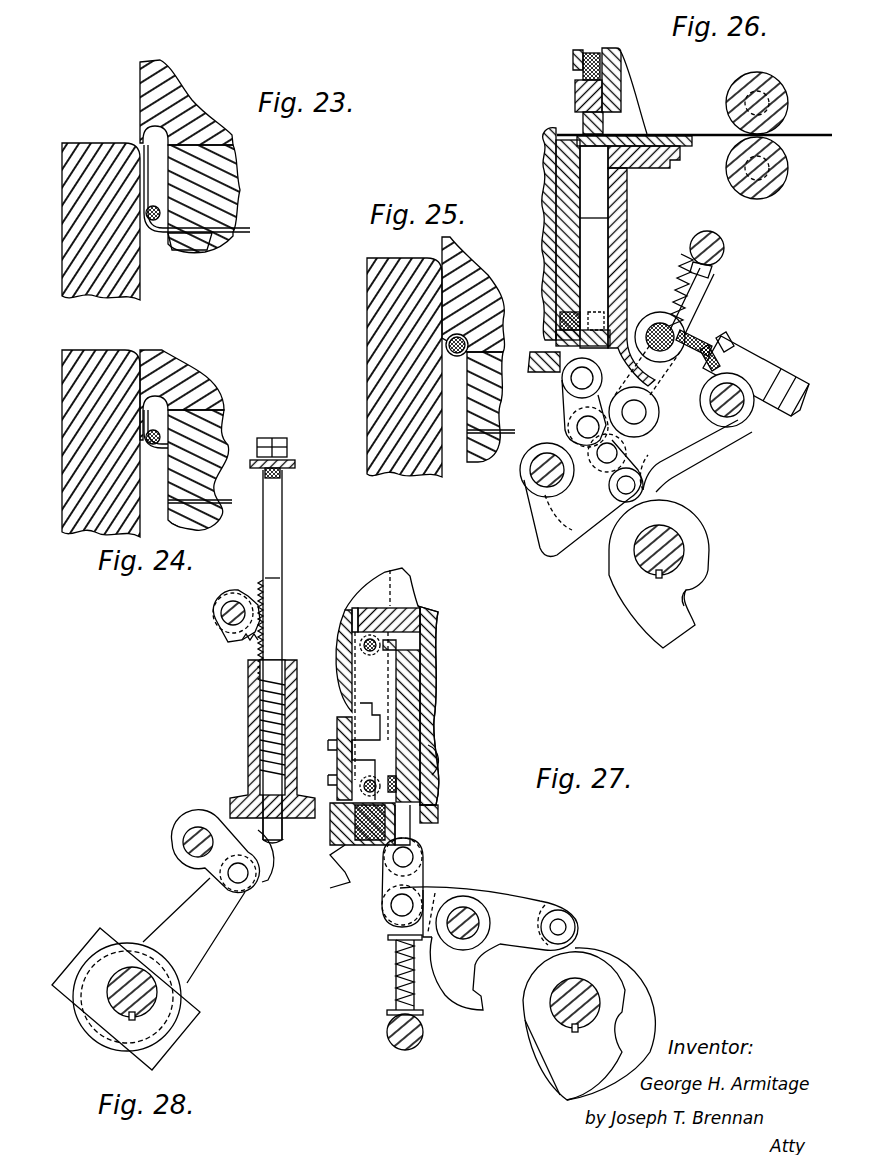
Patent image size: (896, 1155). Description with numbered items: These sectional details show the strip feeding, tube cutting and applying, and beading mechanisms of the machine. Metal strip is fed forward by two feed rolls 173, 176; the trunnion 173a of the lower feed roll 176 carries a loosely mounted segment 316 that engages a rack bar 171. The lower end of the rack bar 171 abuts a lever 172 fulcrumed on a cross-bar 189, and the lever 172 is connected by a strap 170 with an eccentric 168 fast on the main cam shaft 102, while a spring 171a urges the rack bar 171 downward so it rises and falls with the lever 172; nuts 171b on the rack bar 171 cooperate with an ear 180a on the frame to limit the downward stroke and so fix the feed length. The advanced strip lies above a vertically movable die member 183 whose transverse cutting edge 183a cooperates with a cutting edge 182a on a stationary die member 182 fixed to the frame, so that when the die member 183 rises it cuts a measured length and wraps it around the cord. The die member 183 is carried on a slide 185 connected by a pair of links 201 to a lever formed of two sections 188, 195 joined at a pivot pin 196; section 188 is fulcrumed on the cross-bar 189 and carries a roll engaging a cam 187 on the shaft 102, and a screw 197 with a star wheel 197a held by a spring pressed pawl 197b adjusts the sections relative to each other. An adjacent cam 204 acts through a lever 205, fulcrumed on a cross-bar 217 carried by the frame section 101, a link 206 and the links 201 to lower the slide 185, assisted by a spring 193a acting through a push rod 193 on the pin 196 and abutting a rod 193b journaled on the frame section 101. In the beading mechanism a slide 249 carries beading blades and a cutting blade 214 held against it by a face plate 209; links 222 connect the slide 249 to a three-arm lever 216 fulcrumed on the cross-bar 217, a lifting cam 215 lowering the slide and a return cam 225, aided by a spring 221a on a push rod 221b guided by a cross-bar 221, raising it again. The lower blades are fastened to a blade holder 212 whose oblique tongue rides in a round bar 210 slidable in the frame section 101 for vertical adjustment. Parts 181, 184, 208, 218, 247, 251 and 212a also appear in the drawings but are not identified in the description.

In FIG. 23, the clamping block 181 is at (232, 130).
In FIG. 24, the clamping block 181 is at (205, 385).
In FIG. 25, the clamping block 181 is at (470, 333).
In FIG. 26, the clamping block 181 is at (618, 88).
In FIG. 23, the stationary die member 182 is at (236, 170).
In FIG. 24, the stationary die member 182 is at (222, 409).
In FIG. 25, the stationary die member 182 is at (472, 352).
In FIG. 26, the stationary die member 182 is at (628, 118).
In FIG. 23, the cutting edge 182a is at (170, 222).
In FIG. 25, the cutting edge 182a is at (445, 470).
In FIG. 26, the cutting edge 182a is at (582, 130).
In FIG. 23, the die member 183 is at (162, 281).
In FIG. 24, the die member 183 is at (108, 525).
In FIG. 25, the die member 183 is at (395, 360).
In FIG. 26, the die member 183 is at (565, 183).
In FIG. 23, the transverse cutting edge 183a is at (178, 252).
In FIG. 24, the transverse cutting edge 183a is at (200, 490).
In FIG. 25, the transverse cutting edge 183a is at (445, 362).
In FIG. 26, the transverse cutting edge 183a is at (590, 171).
In FIG. 26, the guide member 184 is at (545, 263).
In FIG. 26, the slide 185 is at (596, 238).
In FIG. 26, the frame section 101 is at (630, 247).
In FIG. 27, the frame section 101 is at (440, 816).
In FIG. 26, the main cam shaft 102 is at (685, 549).
In FIG. 27, the main cam shaft 102 is at (585, 985).
In FIG. 28, the main cam shaft 102 is at (160, 991).
In FIG. 26, the upper feed roll 173 is at (789, 99).
In FIG. 26, the lower feed roll 176 is at (789, 172).
In FIG. 26, the push rod 193 is at (690, 278).
In FIG. 26, the spring 193a is at (712, 283).
In FIG. 26, the rod 193b is at (725, 250).
In FIG. 26, the lever section 195 is at (696, 340).
In FIG. 26, the screw 197 is at (784, 376).
In FIG. 26, the star wheel 197a is at (712, 352).
In FIG. 26, the spring pressed pawl 197b is at (735, 349).
In FIG. 26, the cross-bar 189 is at (735, 412).
In FIG. 28, the cross-bar 189 is at (192, 862).
In FIG. 26, the lever section 188 is at (688, 449).
In FIG. 26, the pivot pin 196 is at (645, 418).
In FIG. 26, the links 201 is at (562, 393).
In FIG. 26, the link 206 is at (577, 440).
In FIG. 26, the cross-bar 217 is at (535, 480).
In FIG. 27, the cross-bar 217 is at (480, 922).
In FIG. 26, the lever 205 is at (583, 498).
In FIG. 26, the cam 187 is at (689, 574).
In FIG. 26, the cam 204 is at (684, 618).
In FIG. 27, the housing 208 is at (432, 627).
In FIG. 27, the cutting blade 214 is at (375, 673).
In FIG. 27, the slide 249 is at (412, 689).
In FIG. 27, the projection 251 is at (440, 756).
In FIG. 27, the stop 212a is at (400, 784).
In FIG. 27, the face plate 209 is at (338, 651).
In FIG. 27, the plate 218 is at (336, 745).
In FIG. 27, the block 247 is at (352, 773).
In FIG. 27, the blade holder 212 is at (345, 848).
In FIG. 27, the round bar 210 is at (392, 830).
In FIG. 27, the links 222 is at (424, 871).
In FIG. 27, the three-arm lever 216 is at (520, 897).
In FIG. 27, the cross-bar 221 is at (386, 1033).
In FIG. 27, the spring 221a is at (398, 977).
In FIG. 27, the push rod 221b is at (398, 957).
In FIG. 27, the lifting cam 215 is at (604, 1013).
In FIG. 27, the return cam 225 is at (571, 1053).
In FIG. 28, the rack bar 171 is at (283, 623).
In FIG. 28, the spring 171a is at (270, 721).
In FIG. 28, the nuts 171b is at (288, 450).
In FIG. 28, the ear 180a is at (292, 470).
In FIG. 28, the trunnion 173a is at (215, 617).
In FIG. 28, the segment 316 is at (230, 641).
In FIG. 28, the lever 172 is at (256, 884).
In FIG. 28, the strap 170 is at (194, 930).
In FIG. 28, the eccentric 168 is at (147, 999).